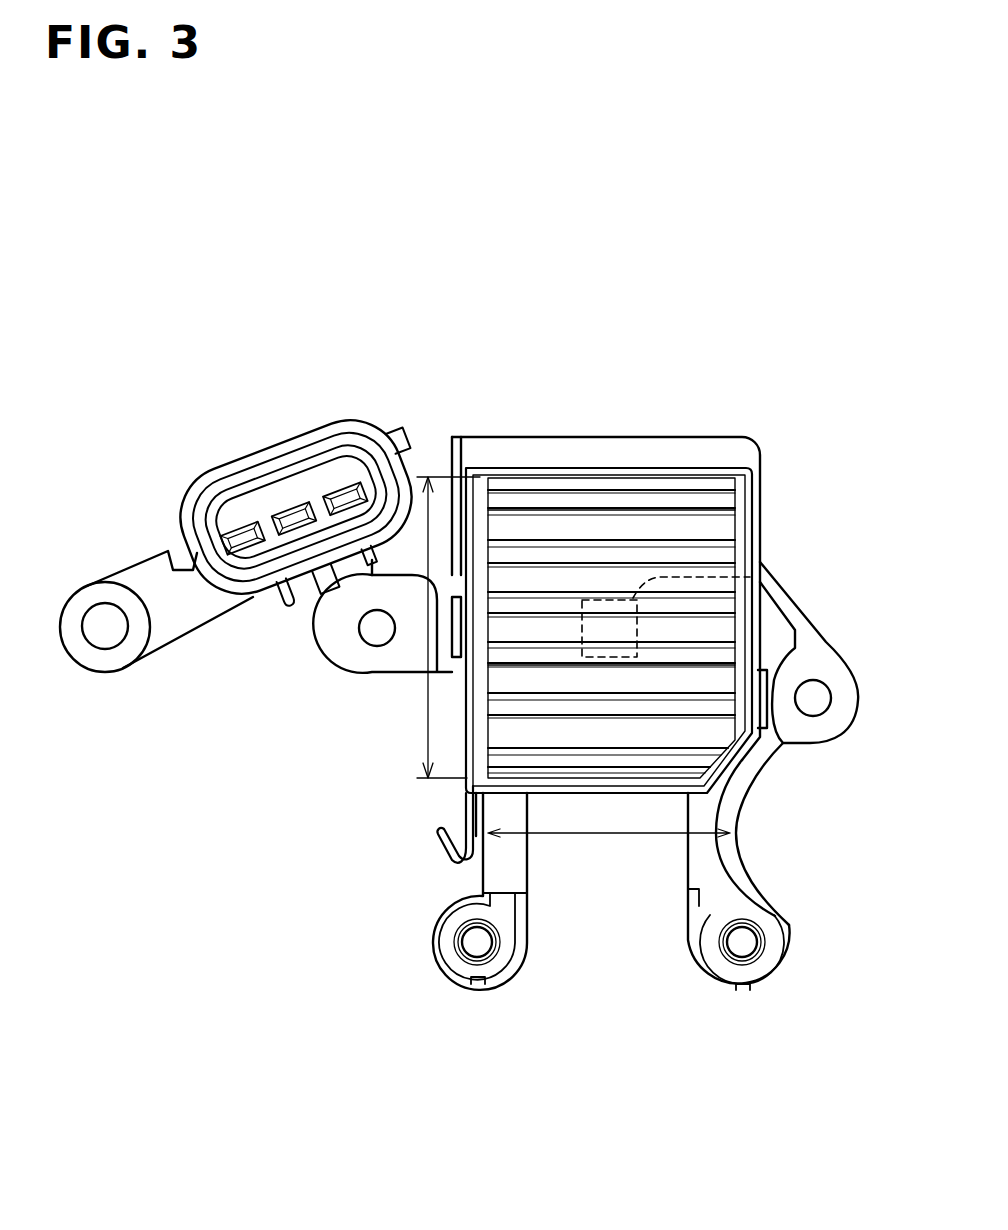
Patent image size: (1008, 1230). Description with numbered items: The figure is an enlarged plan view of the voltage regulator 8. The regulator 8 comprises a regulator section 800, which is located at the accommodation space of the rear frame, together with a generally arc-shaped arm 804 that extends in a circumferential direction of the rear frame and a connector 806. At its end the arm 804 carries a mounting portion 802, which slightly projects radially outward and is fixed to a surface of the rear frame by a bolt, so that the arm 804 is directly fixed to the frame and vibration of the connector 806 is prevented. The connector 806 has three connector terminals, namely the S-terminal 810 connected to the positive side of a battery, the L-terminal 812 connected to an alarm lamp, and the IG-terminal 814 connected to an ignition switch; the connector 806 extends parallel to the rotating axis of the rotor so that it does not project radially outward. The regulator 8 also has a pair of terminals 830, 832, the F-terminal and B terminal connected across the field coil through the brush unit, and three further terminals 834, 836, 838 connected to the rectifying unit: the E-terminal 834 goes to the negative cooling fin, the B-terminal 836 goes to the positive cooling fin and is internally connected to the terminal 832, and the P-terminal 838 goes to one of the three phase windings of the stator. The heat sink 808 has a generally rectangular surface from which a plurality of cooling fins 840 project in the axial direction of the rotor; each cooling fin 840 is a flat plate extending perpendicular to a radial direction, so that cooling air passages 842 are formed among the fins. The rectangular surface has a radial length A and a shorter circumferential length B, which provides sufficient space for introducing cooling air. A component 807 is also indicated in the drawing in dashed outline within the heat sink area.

The voltage regulator 8 is at (503, 297).
The regulator section 800 is at (585, 450).
The mounting portion 802 is at (103, 653).
The arm 804 is at (177, 607).
The connector 806 is at (353, 430).
The internal electronic component 807 is at (782, 567).
The heat sink 808 is at (628, 478).
The S-terminal 810 is at (240, 532).
The L-terminal 812 is at (297, 508).
The IG-terminal 814 is at (332, 498).
The F-terminal 830 is at (458, 960).
The B terminal 832 is at (722, 967).
The E-terminal 834 is at (377, 655).
The B-terminal 836 is at (816, 745).
The P-terminal 838 is at (433, 853).
The cooling fin 840 is at (690, 492).
The cooling air passage 842 is at (725, 503).